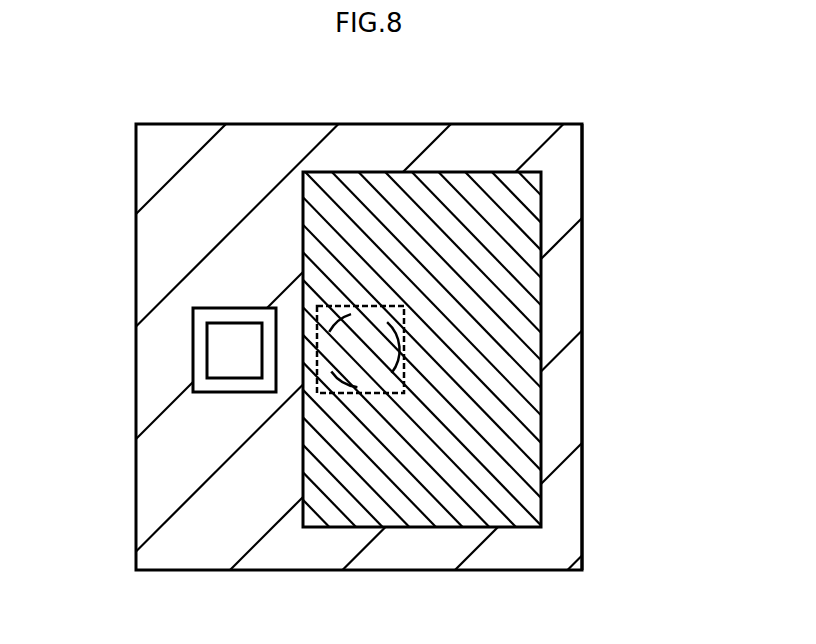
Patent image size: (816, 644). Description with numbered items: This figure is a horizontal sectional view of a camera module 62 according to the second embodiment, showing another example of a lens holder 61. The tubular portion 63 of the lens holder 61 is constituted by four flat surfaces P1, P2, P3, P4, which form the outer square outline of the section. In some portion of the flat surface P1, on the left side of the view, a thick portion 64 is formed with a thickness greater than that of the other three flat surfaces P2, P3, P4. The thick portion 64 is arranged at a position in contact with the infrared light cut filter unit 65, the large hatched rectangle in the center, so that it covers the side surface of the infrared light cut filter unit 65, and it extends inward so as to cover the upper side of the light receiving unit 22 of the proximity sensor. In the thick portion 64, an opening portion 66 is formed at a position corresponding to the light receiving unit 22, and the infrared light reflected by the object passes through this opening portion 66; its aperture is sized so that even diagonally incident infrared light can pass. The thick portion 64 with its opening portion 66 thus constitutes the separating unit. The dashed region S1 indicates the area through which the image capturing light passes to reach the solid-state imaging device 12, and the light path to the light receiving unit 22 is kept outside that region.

The camera module 62 is at (522, 110).
The lens holder 61 is at (562, 194).
The tubular portion 63 is at (637, 347).
The thick portion 64 is at (408, 348).
The flat surface P1 is at (220, 277).
The flat surface P2 is at (415, 150).
The flat surface P3 is at (432, 547).
The flat surface P4 is at (570, 283).
The infrared light cut filter unit 65 is at (507, 462).
The light receiving unit 22 is at (196, 337).
The opening portion 66 is at (230, 392).
The alternate long and short dashed line S1 is at (403, 372).
The solid-state imaging device 12 is at (406, 325).